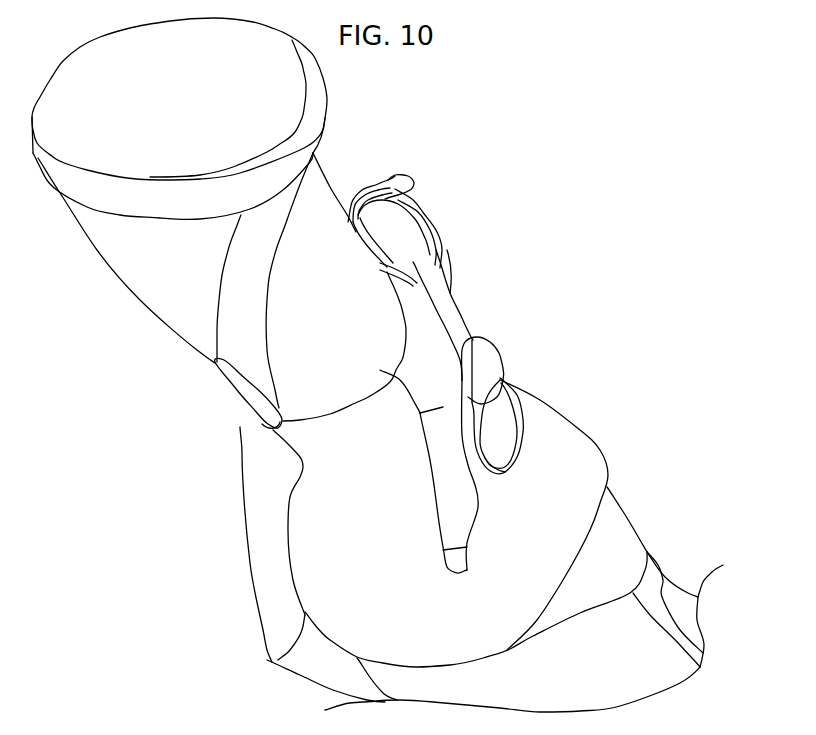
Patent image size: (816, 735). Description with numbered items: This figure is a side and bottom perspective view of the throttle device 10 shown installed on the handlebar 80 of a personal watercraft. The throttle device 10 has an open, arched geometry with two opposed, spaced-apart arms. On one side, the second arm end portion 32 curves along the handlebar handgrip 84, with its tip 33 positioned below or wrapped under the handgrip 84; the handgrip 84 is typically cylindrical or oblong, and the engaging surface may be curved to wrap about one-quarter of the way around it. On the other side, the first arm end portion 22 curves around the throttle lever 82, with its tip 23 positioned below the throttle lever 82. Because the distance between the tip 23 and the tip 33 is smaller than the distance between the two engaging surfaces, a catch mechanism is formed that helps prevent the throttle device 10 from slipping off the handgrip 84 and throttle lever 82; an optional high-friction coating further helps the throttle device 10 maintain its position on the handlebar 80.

The throttle device 10 is at (450, 297).
The first arm end portion 22 is at (508, 408).
The tip 23 is at (490, 457).
The second arm end portion 32 is at (222, 382).
The tip 33 is at (263, 427).
The handlebar 80 is at (597, 444).
The throttle lever 82 is at (483, 368).
The handlebar handgrip 84 is at (171, 253).